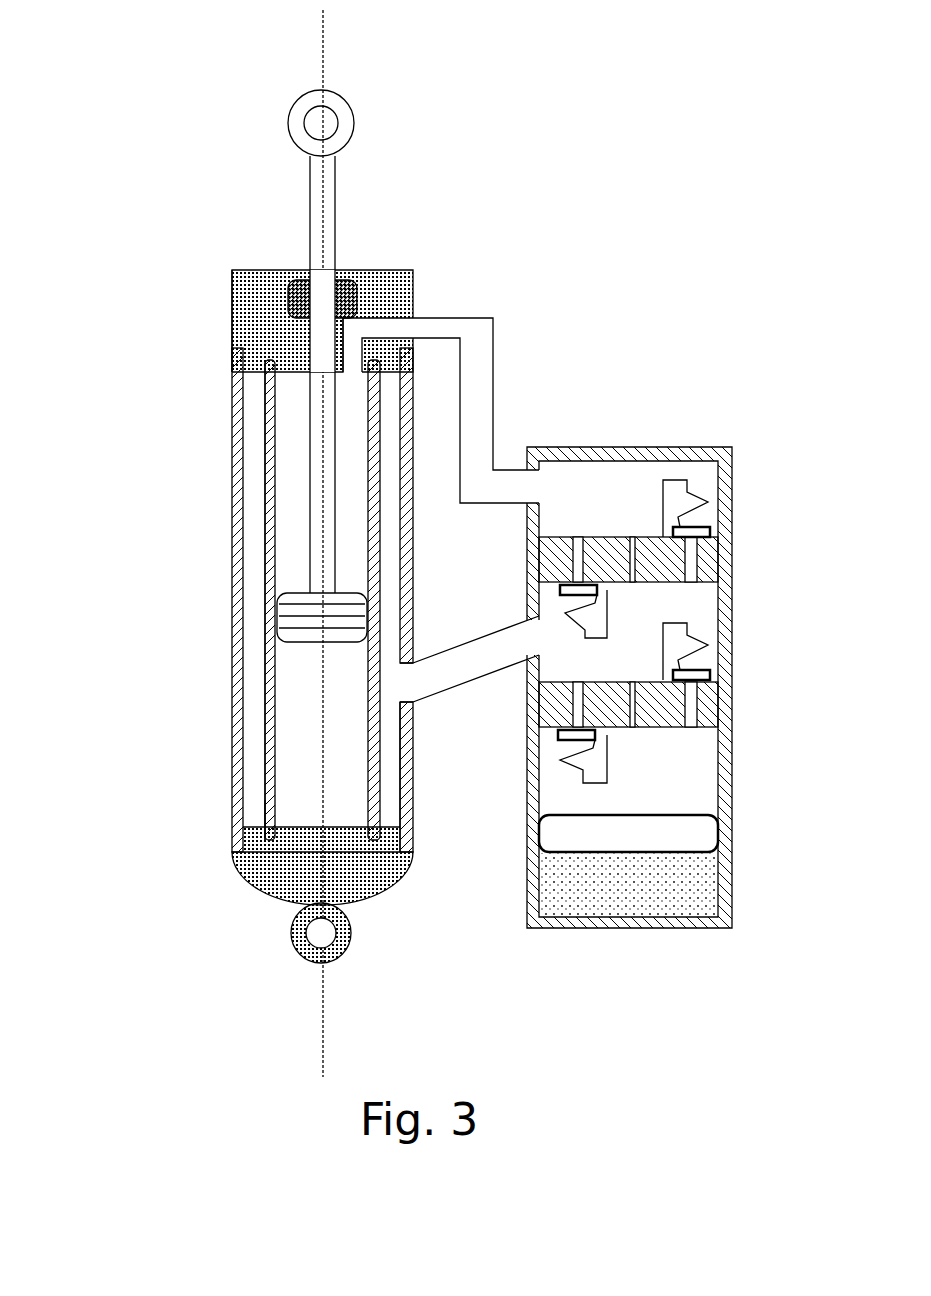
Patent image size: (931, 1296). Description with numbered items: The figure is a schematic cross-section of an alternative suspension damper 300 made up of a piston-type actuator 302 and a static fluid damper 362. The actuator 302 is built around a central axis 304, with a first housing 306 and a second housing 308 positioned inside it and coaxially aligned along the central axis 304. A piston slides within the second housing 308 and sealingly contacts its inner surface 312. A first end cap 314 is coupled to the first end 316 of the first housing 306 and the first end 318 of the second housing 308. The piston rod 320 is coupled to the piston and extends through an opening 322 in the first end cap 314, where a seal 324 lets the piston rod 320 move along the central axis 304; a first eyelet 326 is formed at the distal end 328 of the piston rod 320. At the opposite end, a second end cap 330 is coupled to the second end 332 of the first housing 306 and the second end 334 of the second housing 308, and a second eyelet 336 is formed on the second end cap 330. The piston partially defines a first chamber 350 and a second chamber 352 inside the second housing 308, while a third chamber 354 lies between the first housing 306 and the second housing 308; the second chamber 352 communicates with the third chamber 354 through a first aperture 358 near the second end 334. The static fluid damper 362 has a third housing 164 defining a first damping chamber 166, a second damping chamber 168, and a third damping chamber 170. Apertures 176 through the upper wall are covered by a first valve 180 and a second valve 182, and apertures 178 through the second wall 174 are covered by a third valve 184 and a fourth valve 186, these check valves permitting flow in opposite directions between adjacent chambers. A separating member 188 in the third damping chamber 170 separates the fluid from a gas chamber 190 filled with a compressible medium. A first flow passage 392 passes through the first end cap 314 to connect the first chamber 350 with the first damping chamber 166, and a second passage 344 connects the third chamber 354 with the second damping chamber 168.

The suspension damper 300 is at (582, 160).
The piston-type actuator 302 is at (181, 220).
The central axis 304 is at (320, 48).
The first housing 306 is at (233, 447).
The second housing 308 is at (267, 495).
The inner surface 312 is at (370, 462).
The first end cap 314 is at (257, 313).
The first end of the first housing 316 is at (233, 363).
The first end of the second housing 318 is at (267, 400).
The piston rod 320 is at (328, 247).
The opening 322 is at (349, 250).
The seal 324 is at (287, 267).
The first eyelet 326 is at (340, 110).
The distal end 328 is at (315, 182).
The second end cap 330 is at (257, 887).
The second end of the first housing 332 is at (233, 850).
The second end of the second housing 334 is at (263, 813).
The second eyelet 336 is at (303, 955).
The fluid passage 344 is at (458, 651).
The first chamber 350 is at (297, 564).
The second chamber 352 is at (298, 684).
The third chamber 354 is at (405, 742).
The first aperture 358 is at (394, 797).
The static fluid damper 362 is at (704, 398).
The first flow passage 392 is at (490, 356).
The third housing 164 is at (732, 617).
The first damping chamber 166 is at (599, 477).
The second damping chamber 168 is at (715, 612).
The third damping chamber 170 is at (713, 785).
The second wall 174 is at (527, 548).
The apertures 176 is at (635, 562).
The apertures 178 is at (635, 709).
The first valve 180 is at (707, 523).
The second valve 182 is at (558, 595).
The third valve 184 is at (715, 672).
The fourth valve 186 is at (560, 742).
The separating member 188 is at (705, 830).
The gas chamber 190 is at (707, 892).